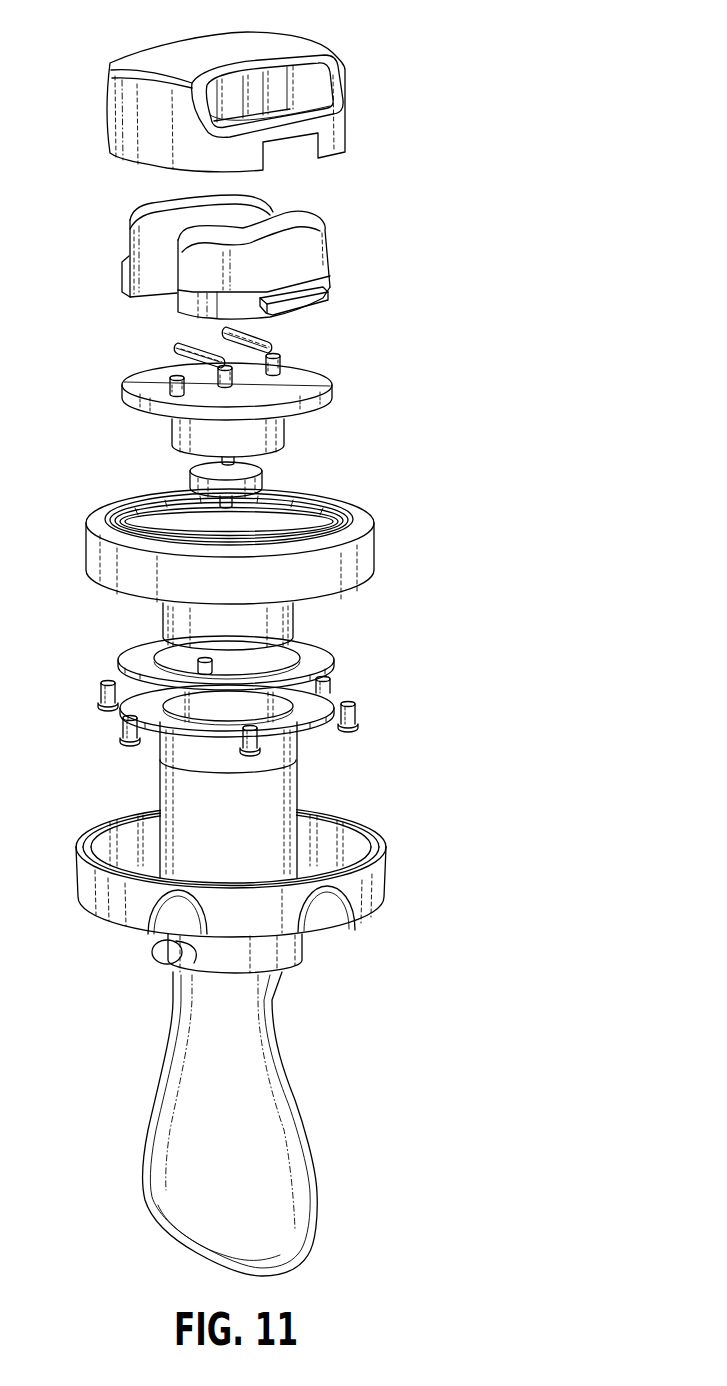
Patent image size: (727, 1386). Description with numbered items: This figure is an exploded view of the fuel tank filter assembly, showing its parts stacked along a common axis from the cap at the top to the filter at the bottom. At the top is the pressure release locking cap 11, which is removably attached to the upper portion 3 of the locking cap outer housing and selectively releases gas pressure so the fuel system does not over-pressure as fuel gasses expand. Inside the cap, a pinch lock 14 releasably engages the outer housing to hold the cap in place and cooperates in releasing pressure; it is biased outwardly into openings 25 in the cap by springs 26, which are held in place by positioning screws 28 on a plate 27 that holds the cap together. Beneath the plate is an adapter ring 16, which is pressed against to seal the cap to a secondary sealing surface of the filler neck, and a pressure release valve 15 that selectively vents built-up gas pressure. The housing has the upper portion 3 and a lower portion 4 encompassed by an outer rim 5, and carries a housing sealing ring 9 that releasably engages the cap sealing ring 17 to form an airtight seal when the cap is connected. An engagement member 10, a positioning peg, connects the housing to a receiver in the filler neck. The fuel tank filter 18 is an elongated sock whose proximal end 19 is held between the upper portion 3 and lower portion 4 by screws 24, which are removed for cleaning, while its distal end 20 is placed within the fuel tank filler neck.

The pressure release locking cap 11 is at (203, 47).
The openings 25 is at (323, 58).
The pinch lock 14 is at (313, 252).
The springs 26 is at (182, 343).
The positioning screws 28 is at (283, 358).
The plate 27 is at (123, 393).
The adapter ring 16 is at (177, 430).
The pressure release valve 15 is at (262, 482).
The upper portion 3 is at (90, 558).
The housing sealing ring 9 is at (332, 656).
The cap sealing ring 17 is at (318, 727).
The screws 24 is at (100, 693).
The proximal end 19 is at (287, 802).
The outer rim 5 is at (72, 885).
The lower portion 4 is at (285, 950).
The engagement member 10 is at (163, 955).
The fuel tank filter 18 is at (157, 1137).
The distal end 20 is at (293, 1258).